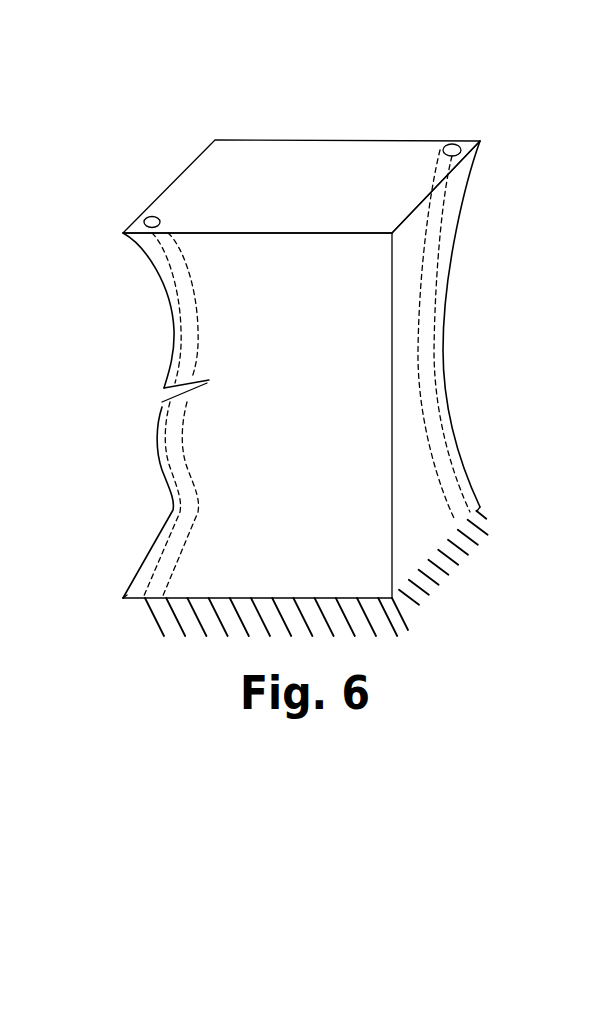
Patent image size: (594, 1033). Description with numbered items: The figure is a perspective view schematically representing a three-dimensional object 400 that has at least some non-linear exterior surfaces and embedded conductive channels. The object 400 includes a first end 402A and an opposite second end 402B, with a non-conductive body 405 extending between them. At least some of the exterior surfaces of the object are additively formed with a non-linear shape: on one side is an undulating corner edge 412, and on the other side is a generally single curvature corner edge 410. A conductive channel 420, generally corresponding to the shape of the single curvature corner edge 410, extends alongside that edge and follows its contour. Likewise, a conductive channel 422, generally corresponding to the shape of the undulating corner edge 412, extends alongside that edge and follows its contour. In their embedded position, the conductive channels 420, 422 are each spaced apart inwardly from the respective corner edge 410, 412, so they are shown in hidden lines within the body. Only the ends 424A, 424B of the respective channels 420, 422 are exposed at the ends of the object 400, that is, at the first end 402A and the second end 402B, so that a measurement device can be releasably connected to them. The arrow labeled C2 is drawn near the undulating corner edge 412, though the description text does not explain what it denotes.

The 3D object 400 is at (303, 318).
The first end 402A is at (375, 151).
The second end 402B is at (415, 553).
The non-conductive body 405 is at (301, 343).
The single curvature corner edge 410 is at (445, 301).
The undulating corner edge 412 is at (170, 312).
The conductive channel 420 is at (436, 373).
The conductive channel 422 is at (172, 514).
The ends of the conductive channels 424A is at (145, 219).
The ends of the conductive channels 424B is at (135, 603).
The curvature direction C2 is at (138, 405).